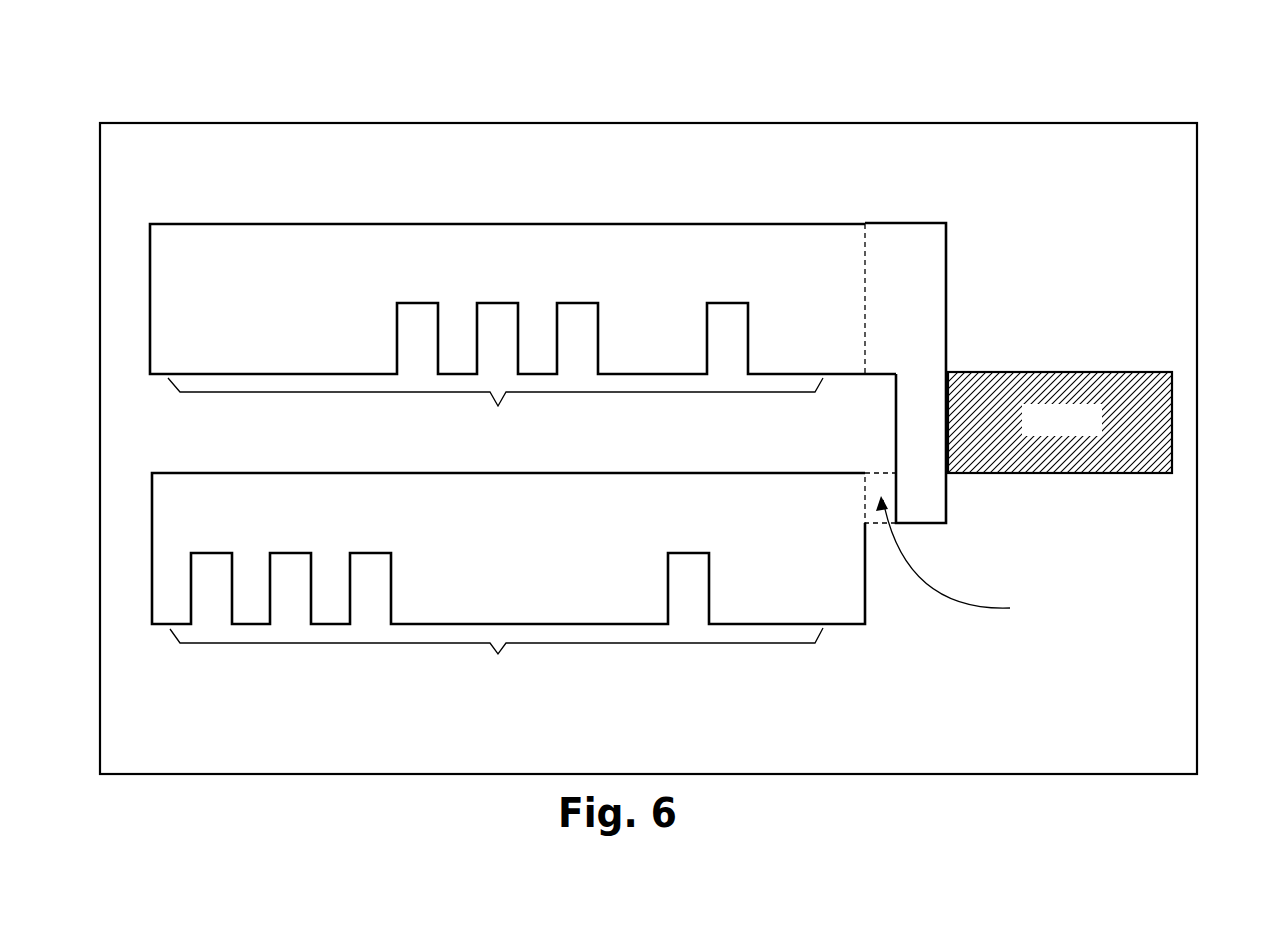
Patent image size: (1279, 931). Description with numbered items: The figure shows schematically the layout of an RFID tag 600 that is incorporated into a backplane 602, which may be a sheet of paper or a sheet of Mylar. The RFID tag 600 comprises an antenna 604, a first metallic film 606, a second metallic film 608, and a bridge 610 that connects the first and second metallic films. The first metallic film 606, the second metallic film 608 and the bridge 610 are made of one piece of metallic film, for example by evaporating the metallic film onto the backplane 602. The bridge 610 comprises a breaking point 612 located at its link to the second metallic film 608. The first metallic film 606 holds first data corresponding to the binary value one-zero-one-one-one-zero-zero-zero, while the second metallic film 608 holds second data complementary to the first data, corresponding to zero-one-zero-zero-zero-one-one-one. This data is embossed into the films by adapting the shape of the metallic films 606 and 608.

The RFID tag 600 is at (1201, 97).
The backplane 602 is at (470, 123).
The antenna 604 is at (1086, 372).
The first metallic film 606 is at (470, 224).
The second metallic film 608 is at (709, 473).
The bridge 610 is at (918, 223).
The breaking point 612 is at (1090, 623).